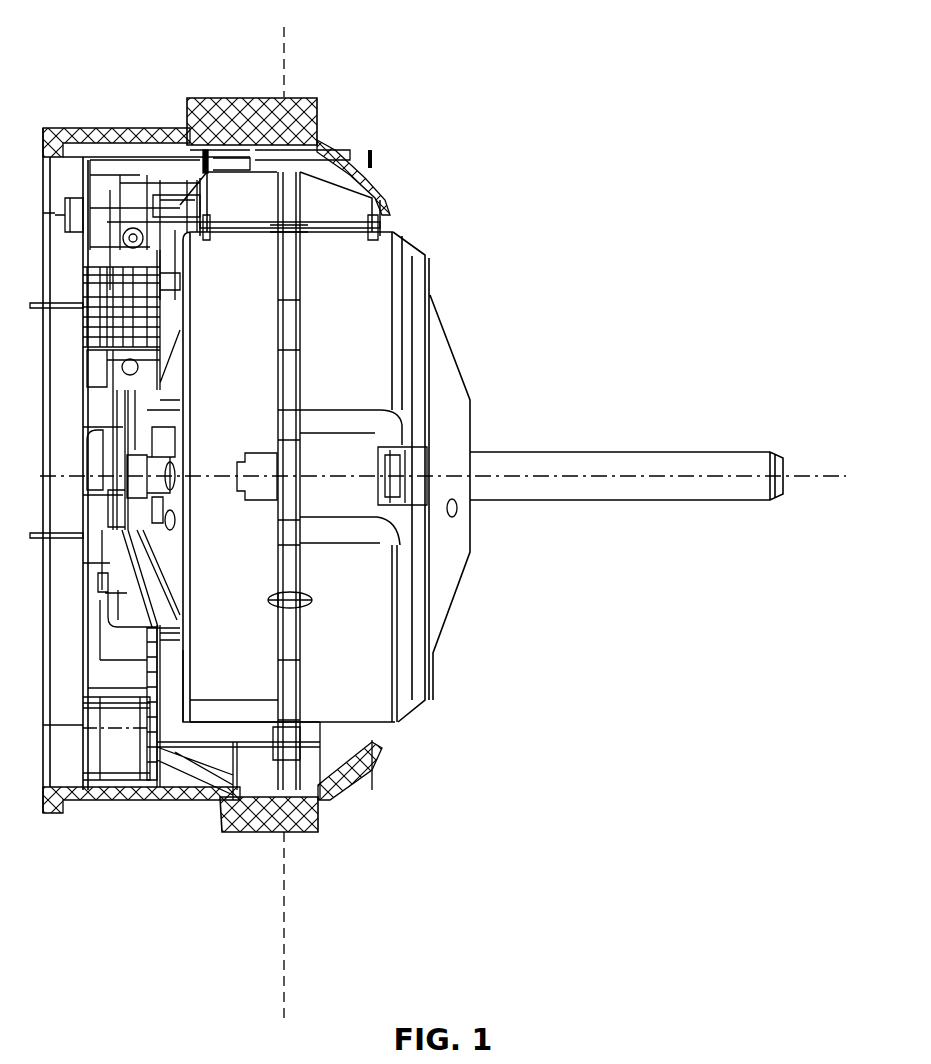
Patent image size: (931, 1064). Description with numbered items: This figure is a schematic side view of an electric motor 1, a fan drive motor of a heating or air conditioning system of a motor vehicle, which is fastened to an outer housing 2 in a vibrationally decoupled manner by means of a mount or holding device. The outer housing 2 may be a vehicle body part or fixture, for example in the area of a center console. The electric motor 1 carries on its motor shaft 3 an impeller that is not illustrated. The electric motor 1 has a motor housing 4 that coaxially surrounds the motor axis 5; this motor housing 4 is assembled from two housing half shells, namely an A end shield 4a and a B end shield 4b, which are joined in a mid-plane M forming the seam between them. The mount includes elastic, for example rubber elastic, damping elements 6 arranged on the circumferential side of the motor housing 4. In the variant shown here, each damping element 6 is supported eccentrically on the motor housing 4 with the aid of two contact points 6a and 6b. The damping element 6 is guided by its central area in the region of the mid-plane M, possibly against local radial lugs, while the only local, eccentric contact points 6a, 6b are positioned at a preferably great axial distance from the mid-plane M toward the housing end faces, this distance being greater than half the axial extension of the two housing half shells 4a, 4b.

The electric motor 1 is at (492, 231).
The outer housing 2 is at (302, 98).
The motor shaft 3 is at (607, 462).
The motor housing 4 is at (428, 293).
The A end shield 4a is at (412, 348).
The B end shield 4b is at (207, 703).
The motor axis 5 is at (815, 478).
The damping element 6 is at (328, 198).
The contact point 6a is at (378, 160).
The contact point 6b is at (205, 167).
The mid-plane M is at (284, 30).